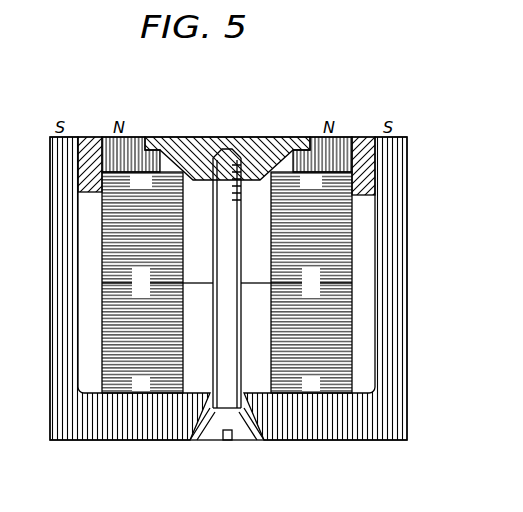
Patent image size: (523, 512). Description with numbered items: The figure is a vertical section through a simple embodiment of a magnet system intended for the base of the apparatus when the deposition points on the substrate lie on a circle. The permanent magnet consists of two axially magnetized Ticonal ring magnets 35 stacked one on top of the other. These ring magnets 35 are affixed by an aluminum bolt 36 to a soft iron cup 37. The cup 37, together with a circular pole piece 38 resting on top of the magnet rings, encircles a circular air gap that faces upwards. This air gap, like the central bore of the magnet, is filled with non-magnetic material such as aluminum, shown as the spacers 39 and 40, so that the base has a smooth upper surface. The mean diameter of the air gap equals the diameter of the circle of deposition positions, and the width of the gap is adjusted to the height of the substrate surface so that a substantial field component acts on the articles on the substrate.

The ring magnets 35 is at (350, 254).
The aluminum bolt 36 is at (248, 435).
The soft iron cup 37 is at (384, 380).
The circular pole piece 38 is at (129, 145).
The spacer 39 is at (358, 145).
The spacer 40 is at (190, 150).